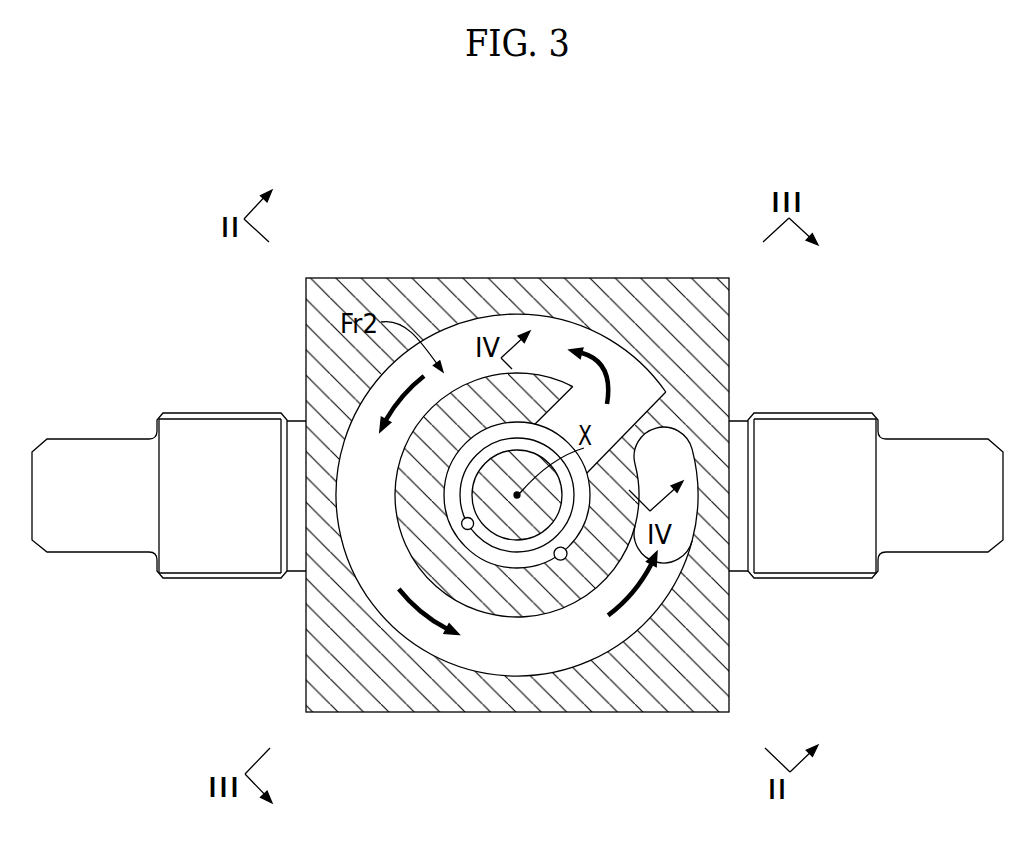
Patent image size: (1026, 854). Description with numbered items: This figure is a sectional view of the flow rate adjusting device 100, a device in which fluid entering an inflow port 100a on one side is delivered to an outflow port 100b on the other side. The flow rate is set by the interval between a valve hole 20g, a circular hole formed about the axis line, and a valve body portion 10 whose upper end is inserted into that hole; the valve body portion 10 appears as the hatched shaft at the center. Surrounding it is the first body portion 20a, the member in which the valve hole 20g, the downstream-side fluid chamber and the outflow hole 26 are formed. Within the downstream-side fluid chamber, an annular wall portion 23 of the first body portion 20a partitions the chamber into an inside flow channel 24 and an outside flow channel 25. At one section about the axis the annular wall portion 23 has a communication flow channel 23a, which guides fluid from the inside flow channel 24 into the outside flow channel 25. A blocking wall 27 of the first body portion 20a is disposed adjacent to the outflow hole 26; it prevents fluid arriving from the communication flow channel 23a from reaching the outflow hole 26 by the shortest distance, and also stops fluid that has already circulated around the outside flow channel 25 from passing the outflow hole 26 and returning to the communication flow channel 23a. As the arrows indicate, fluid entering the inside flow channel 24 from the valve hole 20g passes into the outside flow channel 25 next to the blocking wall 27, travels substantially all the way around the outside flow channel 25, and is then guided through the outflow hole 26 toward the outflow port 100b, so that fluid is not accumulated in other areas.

The flow rate adjusting device 100 is at (703, 153).
The inflow port 100a is at (92, 439).
The outflow port 100b is at (940, 439).
The first body portion 20a is at (730, 336).
The valve body portion 10 is at (474, 478).
The valve hole 20g is at (470, 522).
The annular wall portion 23 is at (494, 632).
The communication flow channel 23a is at (557, 394).
The inside flow channel 24 is at (570, 560).
The outside flow channel 25 is at (605, 642).
The outflow hole 26 is at (654, 570).
The blocking wall 27 is at (647, 382).